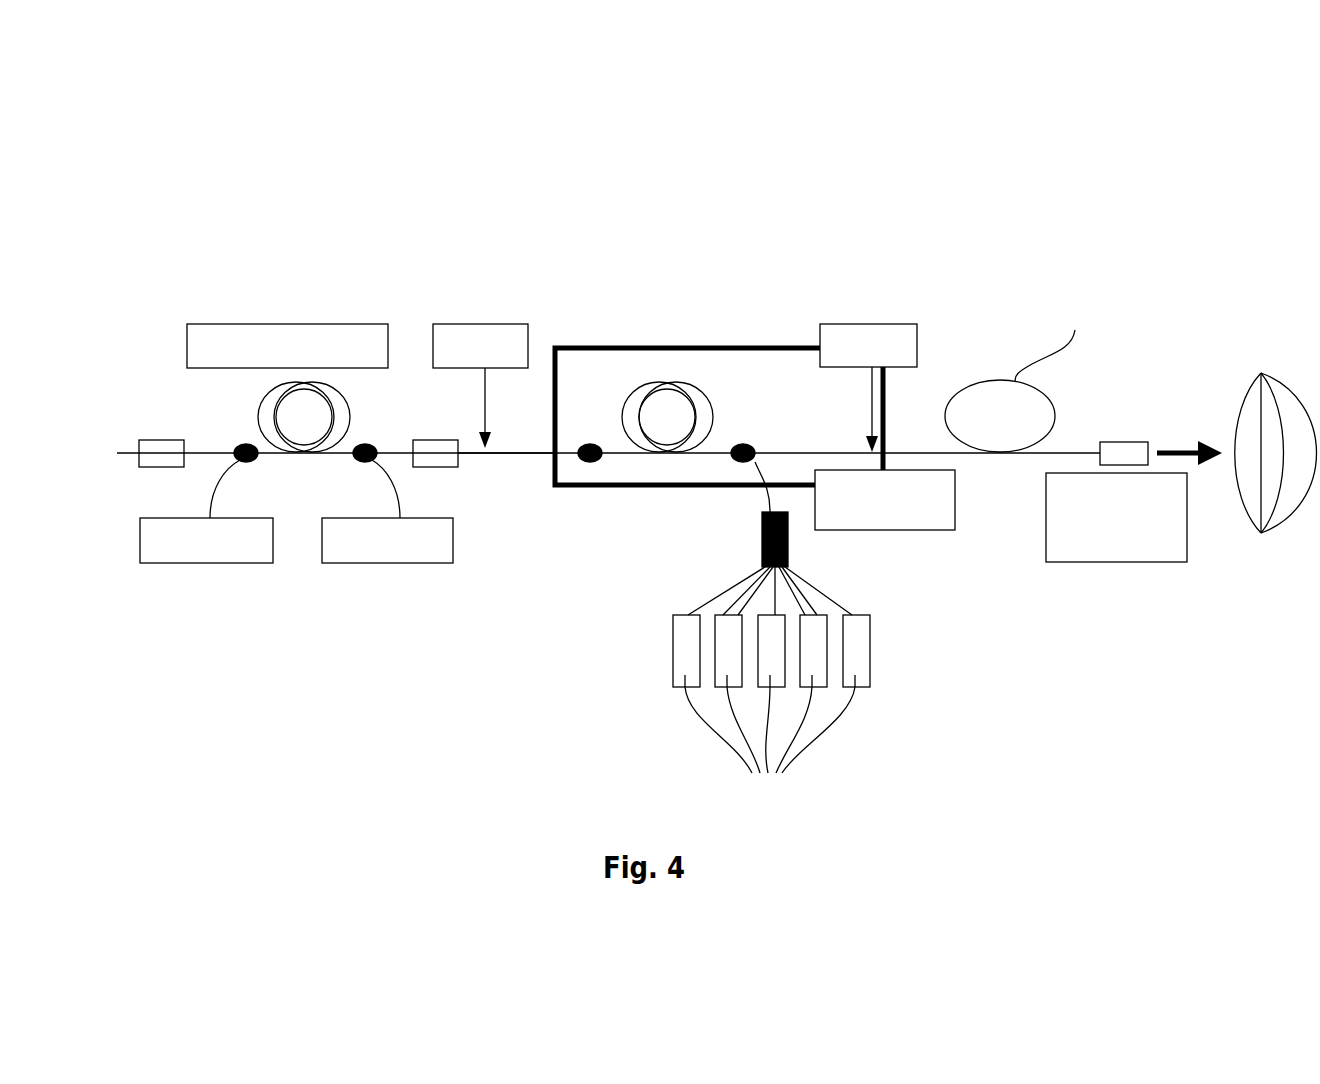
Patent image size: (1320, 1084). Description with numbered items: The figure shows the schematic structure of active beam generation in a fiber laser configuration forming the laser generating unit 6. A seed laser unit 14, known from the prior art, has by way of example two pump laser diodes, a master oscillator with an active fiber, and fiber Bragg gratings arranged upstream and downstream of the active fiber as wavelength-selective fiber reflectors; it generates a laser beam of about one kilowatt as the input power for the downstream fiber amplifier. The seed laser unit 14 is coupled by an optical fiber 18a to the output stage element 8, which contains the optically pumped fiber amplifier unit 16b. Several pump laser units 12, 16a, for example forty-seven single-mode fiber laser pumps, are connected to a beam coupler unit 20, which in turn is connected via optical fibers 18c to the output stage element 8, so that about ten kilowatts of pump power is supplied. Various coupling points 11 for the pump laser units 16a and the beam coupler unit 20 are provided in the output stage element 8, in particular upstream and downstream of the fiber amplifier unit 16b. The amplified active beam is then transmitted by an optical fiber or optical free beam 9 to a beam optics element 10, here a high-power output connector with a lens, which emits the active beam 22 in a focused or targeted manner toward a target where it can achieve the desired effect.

The laser generating unit 6 is at (392, 224).
The output stage element 8 is at (886, 398).
The optical fiber/optical free beam 9 is at (1005, 452).
The beam optics element 10 is at (1122, 442).
The coupling points 11 is at (746, 444).
The fully movable part / stationary part 12 is at (412, 686).
The seed laser unit 14 is at (468, 590).
The pump laser unit 16a is at (770, 741).
The fiber amplifier unit 16b is at (663, 455).
The optical fiber 18a is at (500, 455).
The optical fiber 18c is at (748, 462).
The beam coupler unit 20 is at (789, 535).
The active beam 22 is at (1190, 462).